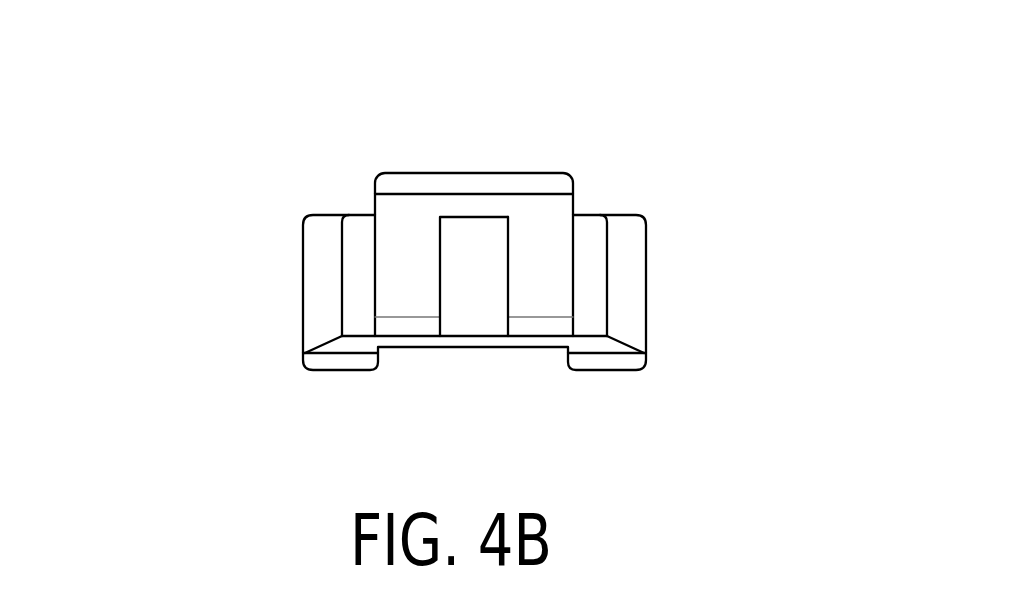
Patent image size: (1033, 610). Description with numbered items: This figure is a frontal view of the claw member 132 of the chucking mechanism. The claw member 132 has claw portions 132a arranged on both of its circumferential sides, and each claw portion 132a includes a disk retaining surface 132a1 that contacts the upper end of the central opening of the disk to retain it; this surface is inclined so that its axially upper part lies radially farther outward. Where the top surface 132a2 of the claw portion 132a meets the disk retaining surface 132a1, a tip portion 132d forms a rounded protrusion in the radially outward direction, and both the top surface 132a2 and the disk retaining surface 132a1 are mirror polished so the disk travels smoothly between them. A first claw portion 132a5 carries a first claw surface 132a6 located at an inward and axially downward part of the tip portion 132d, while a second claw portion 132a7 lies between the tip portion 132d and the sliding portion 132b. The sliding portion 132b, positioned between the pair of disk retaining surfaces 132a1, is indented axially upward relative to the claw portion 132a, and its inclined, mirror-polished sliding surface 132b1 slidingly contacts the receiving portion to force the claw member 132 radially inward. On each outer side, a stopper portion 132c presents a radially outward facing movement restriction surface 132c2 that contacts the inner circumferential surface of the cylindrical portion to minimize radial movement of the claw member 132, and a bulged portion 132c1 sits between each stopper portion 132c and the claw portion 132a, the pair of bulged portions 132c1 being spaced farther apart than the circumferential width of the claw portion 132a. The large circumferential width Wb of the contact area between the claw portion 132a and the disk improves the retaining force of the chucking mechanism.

The claw member 132 is at (310, 72).
The claw portion 132a is at (408, 217).
The disk retaining surface 132a1 is at (538, 257).
The top surface 132a2 is at (413, 173).
The first claw portion 132a5 is at (387, 222).
The first claw surface 132a6 is at (543, 287).
The second claw portion 132a7 is at (485, 203).
The sliding portion 132b is at (470, 293).
The sliding surface 132b1 is at (493, 293).
The stopper portion 132c is at (303, 292).
The bulged portion 132c1 is at (304, 341).
The movement restriction surface 132c2 is at (350, 245).
The tip portion 132d is at (502, 175).
The circumferential width Wb is at (438, 239).